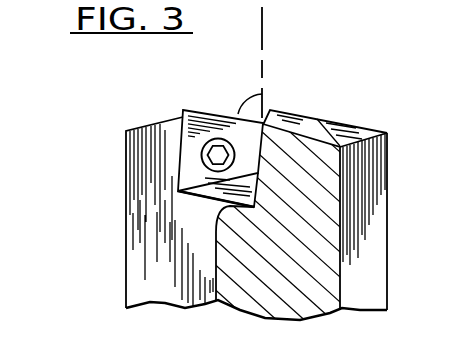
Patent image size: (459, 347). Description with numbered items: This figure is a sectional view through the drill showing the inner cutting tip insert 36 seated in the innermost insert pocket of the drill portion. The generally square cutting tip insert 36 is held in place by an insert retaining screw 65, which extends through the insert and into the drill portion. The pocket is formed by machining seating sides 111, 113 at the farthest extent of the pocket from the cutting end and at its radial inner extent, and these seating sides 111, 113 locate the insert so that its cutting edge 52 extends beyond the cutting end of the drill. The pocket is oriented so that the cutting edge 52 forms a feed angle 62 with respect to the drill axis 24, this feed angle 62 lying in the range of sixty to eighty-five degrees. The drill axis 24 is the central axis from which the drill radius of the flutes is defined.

The drill axis 24 is at (262, 43).
The feed angle 62 is at (259, 93).
The cutting edge 52 is at (203, 108).
The cutting tip insert 36 is at (182, 118).
The insert retaining screw 65 is at (212, 158).
The seating side 113 is at (178, 191).
The seating side 111 is at (205, 199).